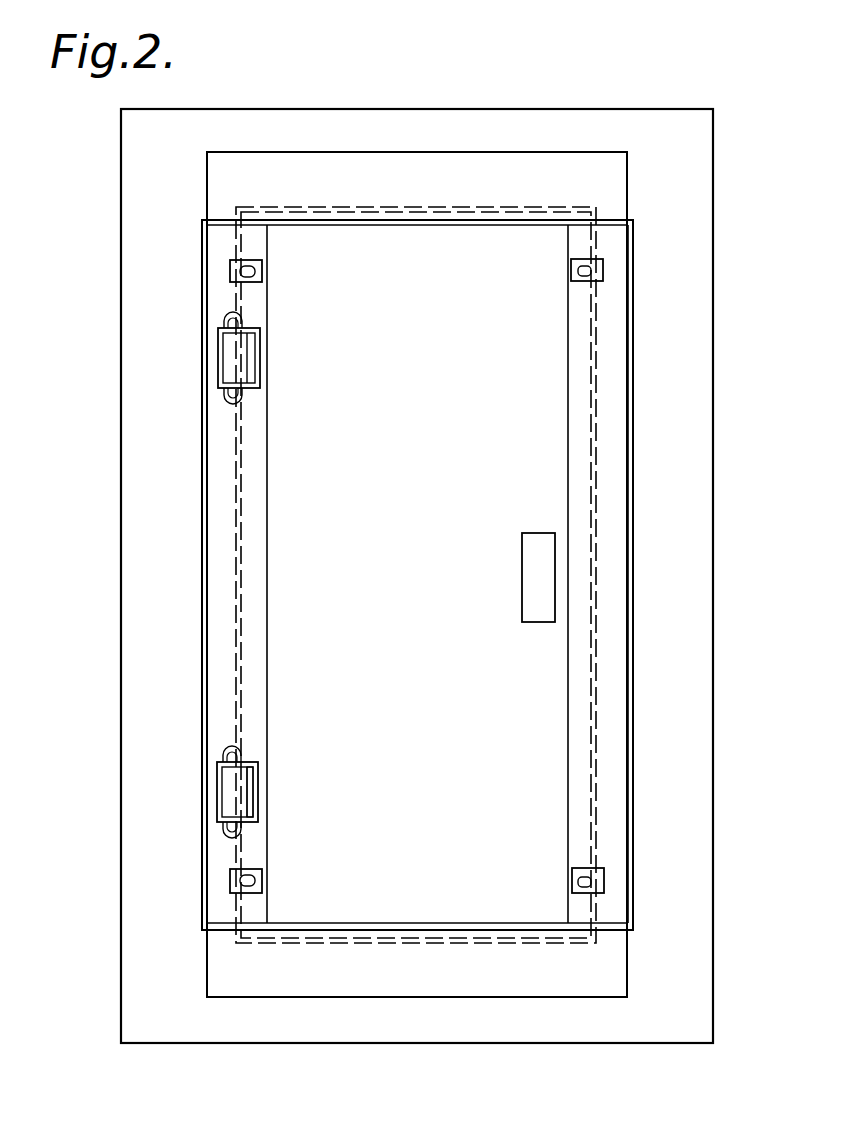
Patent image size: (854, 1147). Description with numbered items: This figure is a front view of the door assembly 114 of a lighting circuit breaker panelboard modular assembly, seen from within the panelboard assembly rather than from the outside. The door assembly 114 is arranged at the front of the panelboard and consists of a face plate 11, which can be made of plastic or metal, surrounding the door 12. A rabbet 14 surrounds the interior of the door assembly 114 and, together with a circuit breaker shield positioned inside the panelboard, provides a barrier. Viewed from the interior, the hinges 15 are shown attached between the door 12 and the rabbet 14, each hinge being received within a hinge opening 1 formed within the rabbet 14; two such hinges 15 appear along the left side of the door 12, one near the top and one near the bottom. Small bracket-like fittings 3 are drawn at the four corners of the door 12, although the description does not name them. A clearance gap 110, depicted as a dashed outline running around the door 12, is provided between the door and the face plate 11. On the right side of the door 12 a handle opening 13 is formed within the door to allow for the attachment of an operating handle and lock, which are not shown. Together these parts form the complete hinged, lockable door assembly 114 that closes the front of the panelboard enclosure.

The hinge opening 1 is at (250, 792).
The mounting bracket 3 is at (250, 268).
The face plate 11 is at (713, 257).
The door 12 is at (377, 463).
The handle opening 13 is at (550, 598).
The rabbet 14 is at (202, 585).
The hinges 15 is at (222, 345).
The clearance gap 110 is at (472, 207).
The door assembly 114 is at (752, 909).